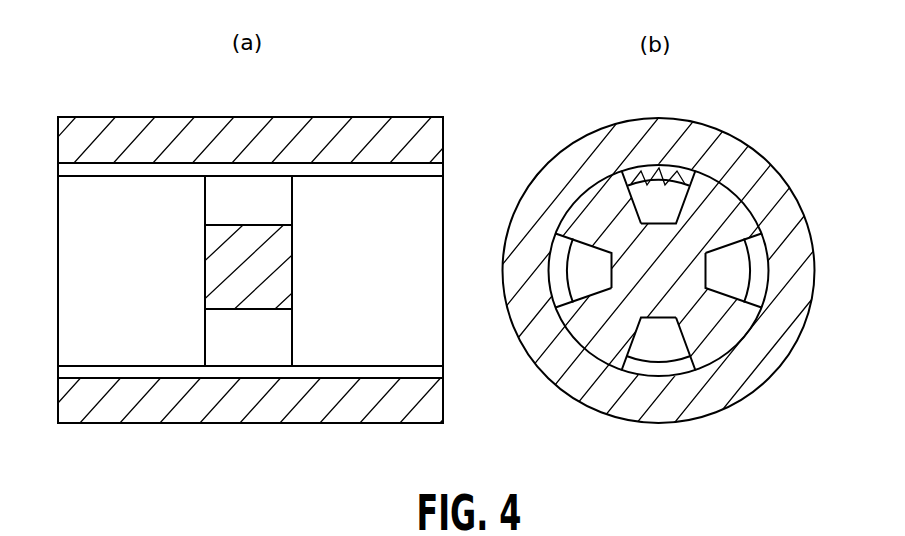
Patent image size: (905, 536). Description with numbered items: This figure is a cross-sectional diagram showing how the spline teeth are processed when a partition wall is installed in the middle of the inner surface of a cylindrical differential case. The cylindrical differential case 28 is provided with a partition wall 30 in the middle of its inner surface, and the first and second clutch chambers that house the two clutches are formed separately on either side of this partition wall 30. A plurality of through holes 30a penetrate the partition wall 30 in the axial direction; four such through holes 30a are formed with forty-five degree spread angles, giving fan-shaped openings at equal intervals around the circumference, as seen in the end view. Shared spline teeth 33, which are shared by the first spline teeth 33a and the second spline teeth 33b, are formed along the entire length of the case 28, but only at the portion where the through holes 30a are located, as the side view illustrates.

The cylindrical differential case 28 is at (142, 118).
The partition wall 30 is at (277, 259).
The through holes 30a is at (277, 206).
The shared spline teeth 33 is at (222, 183).
The first spline teeth 33a is at (115, 177).
The second spline teeth 33b is at (417, 177).